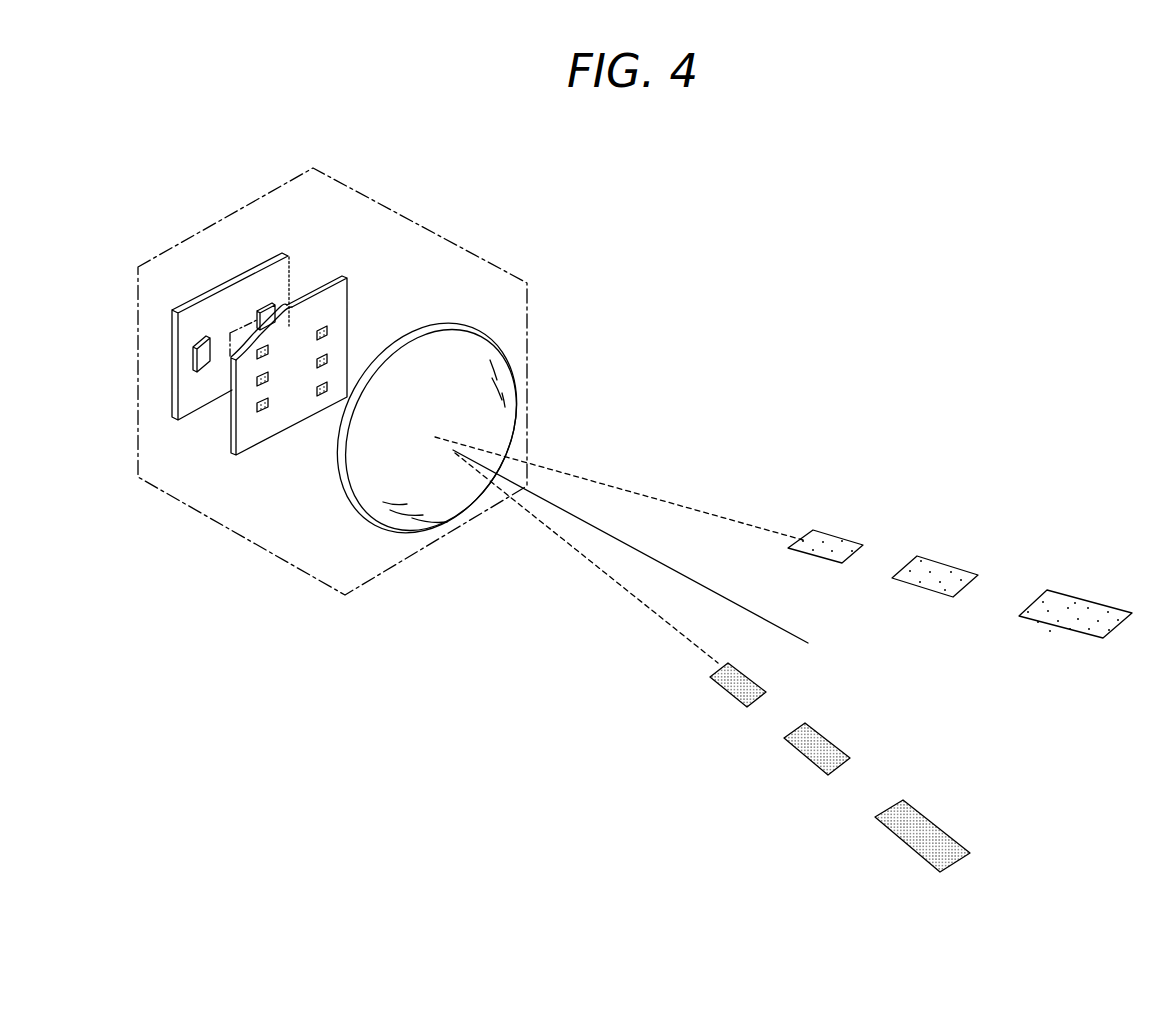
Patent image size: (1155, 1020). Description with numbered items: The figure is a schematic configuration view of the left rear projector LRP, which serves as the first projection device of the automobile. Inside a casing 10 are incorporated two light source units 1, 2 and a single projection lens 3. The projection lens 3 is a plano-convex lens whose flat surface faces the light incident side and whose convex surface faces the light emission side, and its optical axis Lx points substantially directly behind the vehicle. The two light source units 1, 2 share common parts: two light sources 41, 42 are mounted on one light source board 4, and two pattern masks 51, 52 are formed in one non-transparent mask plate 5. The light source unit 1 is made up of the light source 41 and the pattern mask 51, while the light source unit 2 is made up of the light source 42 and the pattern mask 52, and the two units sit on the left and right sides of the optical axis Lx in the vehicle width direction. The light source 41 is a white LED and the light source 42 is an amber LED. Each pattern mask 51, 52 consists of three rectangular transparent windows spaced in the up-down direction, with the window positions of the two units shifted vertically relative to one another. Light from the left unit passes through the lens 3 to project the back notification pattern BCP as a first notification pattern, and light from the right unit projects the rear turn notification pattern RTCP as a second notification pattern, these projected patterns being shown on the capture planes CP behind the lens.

The light source unit 1 is at (209, 313).
The light source unit 2 is at (293, 341).
The projection lens 3 is at (452, 522).
The light source board 4 is at (173, 324).
The non-transparent mask plate 5 is at (284, 428).
The casing 10 is at (528, 285).
The light source 41 is at (193, 360).
The light source 42 is at (273, 303).
The pattern mask 51 is at (253, 383).
The pattern mask 52 is at (330, 342).
The left rear projector LRP is at (367, 373).
The optical axis Lx is at (725, 597).
The capture planes CP is at (790, 654).
The back notification pattern BCP is at (942, 557).
The rear turn notification pattern RTCP is at (797, 753).